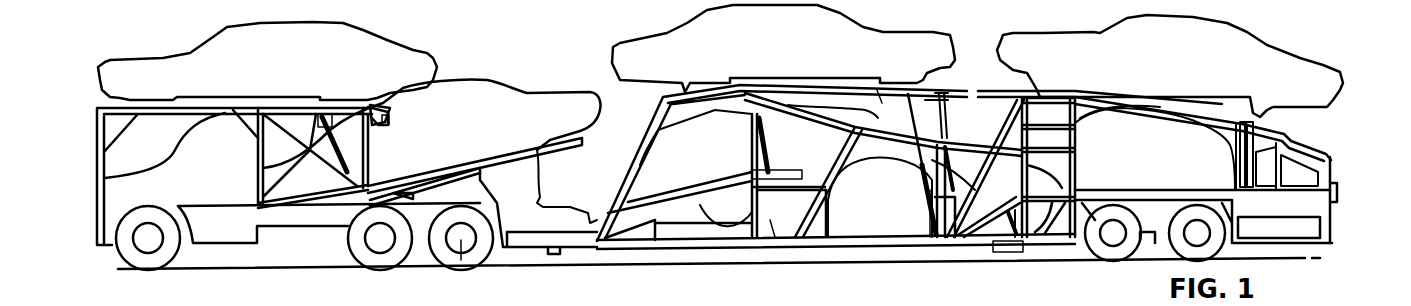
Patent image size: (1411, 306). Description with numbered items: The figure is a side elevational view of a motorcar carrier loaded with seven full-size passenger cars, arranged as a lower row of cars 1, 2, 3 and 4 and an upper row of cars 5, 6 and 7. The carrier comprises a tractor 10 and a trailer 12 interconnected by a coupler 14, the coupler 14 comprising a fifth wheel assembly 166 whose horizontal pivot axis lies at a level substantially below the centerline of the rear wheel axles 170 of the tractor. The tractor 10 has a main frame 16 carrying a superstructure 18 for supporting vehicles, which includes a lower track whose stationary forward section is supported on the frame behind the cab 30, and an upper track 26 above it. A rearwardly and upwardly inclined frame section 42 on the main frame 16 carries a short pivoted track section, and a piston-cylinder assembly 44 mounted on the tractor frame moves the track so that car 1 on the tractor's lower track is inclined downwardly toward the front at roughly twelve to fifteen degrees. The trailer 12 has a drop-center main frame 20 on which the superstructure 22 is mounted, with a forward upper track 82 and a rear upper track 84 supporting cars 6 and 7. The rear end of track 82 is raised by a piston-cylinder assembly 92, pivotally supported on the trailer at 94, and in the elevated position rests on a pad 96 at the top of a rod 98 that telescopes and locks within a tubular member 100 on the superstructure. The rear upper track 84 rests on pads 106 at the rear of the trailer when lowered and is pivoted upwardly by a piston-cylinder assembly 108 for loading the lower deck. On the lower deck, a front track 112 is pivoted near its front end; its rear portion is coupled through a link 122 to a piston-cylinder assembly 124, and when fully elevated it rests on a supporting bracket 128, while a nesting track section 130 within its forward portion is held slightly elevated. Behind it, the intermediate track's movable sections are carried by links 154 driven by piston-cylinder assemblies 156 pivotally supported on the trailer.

The car 1 is at (452, 144).
The car 2 is at (682, 163).
The car 3 is at (865, 211).
The car 4 is at (1140, 166).
The car 5 is at (266, 66).
The car 6 is at (761, 53).
The car 7 is at (1166, 69).
The tractor 10 is at (349, 190).
The trailer 12 is at (844, 255).
The coupler 14 is at (514, 254).
The main frame 16 is at (311, 221).
The superstructure 18 is at (259, 162).
The main frame 20 is at (1067, 250).
The superstructure 22 is at (651, 111).
The upper track 26 is at (181, 119).
The cab 30 is at (150, 178).
The inclined frame section 42 is at (548, 166).
The piston-cylinder assembly 44 is at (549, 186).
The forward upper track 82 is at (892, 108).
The rear upper track 84 is at (1289, 137).
The piston-cylinder assembly 92 is at (920, 170).
The pivot support 94 is at (933, 240).
The pad 96 is at (948, 102).
The rod 98 is at (944, 127).
The tubular member 100 is at (1016, 183).
The pads 106 is at (1330, 162).
The piston-cylinder assembly 108 is at (1242, 165).
The front track 112 is at (692, 197).
The link 122 is at (766, 160).
The piston-cylinder assembly 124 is at (773, 237).
The supporting bracket 128 is at (809, 182).
The nesting track section 130 is at (647, 207).
The links 154 is at (994, 240).
The piston-cylinder assemblies 156 is at (1021, 253).
The fifth wheel assembly 166 is at (550, 249).
The rear wheel axles 170 is at (382, 240).